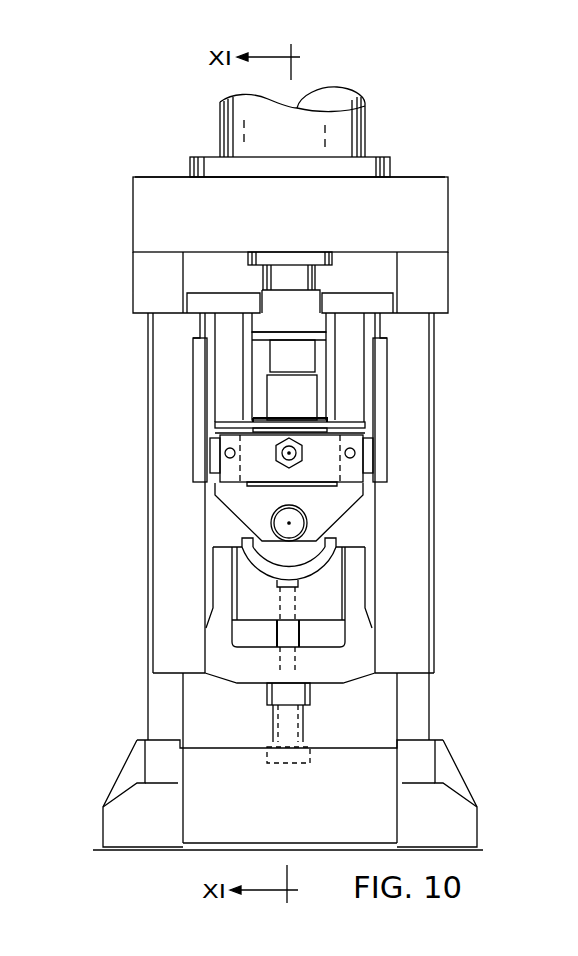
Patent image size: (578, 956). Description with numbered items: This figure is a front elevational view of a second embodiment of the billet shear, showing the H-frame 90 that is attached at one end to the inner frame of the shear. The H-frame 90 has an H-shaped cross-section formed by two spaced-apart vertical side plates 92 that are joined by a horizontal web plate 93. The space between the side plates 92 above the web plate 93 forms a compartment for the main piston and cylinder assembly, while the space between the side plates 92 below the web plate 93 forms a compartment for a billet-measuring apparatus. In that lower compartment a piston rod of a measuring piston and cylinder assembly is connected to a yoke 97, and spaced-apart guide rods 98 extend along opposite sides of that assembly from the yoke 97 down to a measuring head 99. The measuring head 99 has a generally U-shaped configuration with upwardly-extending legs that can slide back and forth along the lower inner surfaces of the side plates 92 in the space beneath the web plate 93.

The H-frame 90 is at (206, 402).
The vertical side plates 92 is at (207, 353).
The horizontal web plate 93 is at (348, 422).
The yoke 97 is at (345, 477).
The guide rods 98 is at (212, 450).
The measuring head 99 is at (348, 498).